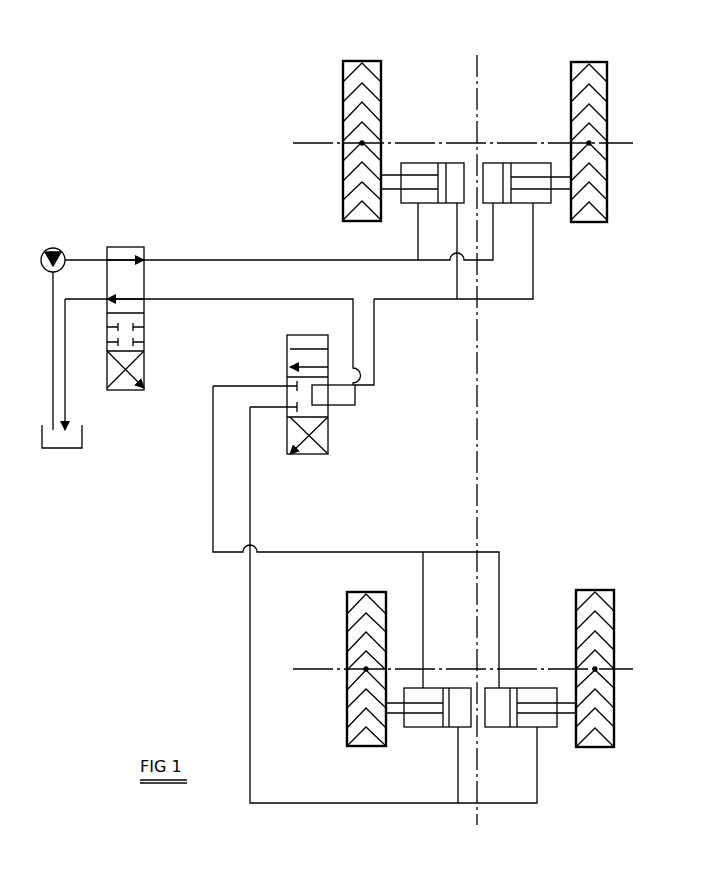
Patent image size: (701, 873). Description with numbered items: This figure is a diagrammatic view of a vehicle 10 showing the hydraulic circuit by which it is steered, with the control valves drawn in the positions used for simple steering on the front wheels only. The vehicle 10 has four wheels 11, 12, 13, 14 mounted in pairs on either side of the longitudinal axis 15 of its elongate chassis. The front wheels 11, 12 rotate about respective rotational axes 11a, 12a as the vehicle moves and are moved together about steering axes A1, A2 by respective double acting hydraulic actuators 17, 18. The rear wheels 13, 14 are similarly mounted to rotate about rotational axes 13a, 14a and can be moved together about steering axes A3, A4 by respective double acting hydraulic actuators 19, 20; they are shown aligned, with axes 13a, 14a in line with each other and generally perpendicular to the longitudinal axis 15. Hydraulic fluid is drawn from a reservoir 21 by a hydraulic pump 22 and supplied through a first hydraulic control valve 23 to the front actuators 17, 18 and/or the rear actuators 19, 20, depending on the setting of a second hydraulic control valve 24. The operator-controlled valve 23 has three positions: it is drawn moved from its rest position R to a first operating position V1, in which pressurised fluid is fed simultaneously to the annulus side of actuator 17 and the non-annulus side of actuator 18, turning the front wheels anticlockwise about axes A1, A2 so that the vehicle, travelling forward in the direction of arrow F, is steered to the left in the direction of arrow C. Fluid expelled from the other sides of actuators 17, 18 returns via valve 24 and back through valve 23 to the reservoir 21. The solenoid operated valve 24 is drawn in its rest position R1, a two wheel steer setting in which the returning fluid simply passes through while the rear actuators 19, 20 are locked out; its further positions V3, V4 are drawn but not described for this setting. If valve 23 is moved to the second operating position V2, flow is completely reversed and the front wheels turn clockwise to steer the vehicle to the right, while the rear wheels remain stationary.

The vehicle 10 is at (181, 59).
The front wheel 11 is at (350, 66).
The front wheel 12 is at (578, 68).
The rear wheel 13 is at (350, 600).
The rear wheel 14 is at (580, 598).
The rotational axis 11a is at (425, 140).
The rotational axis 12a is at (537, 141).
The rotational axis 13a is at (405, 665).
The rotational axis 14a is at (520, 666).
The longitudinal axis 15 is at (480, 416).
The double acting hydraulic actuator 17 is at (408, 205).
The double acting hydraulic actuator 18 is at (548, 205).
The double acting hydraulic actuator 19 is at (422, 729).
The double acting hydraulic actuator 20 is at (508, 729).
The reservoir 21 is at (84, 448).
The hydraulic pump 22 is at (43, 250).
The first hydraulic control valve 23 is at (135, 308).
The second hydraulic control valve 24 is at (306, 390).
The steering axis A1 is at (362, 145).
The steering axis A2 is at (589, 145).
The steering axis A3 is at (366, 670).
The steering axis A4 is at (595, 669).
The first operating position V1 is at (144, 276).
The second operating position V2 is at (144, 378).
The third valve position V3 is at (287, 362).
The fourth valve position V4 is at (287, 442).
The rest position R is at (144, 333).
The rest position R1 is at (332, 400).
The arrow C is at (558, 335).
The arrow F is at (653, 344).